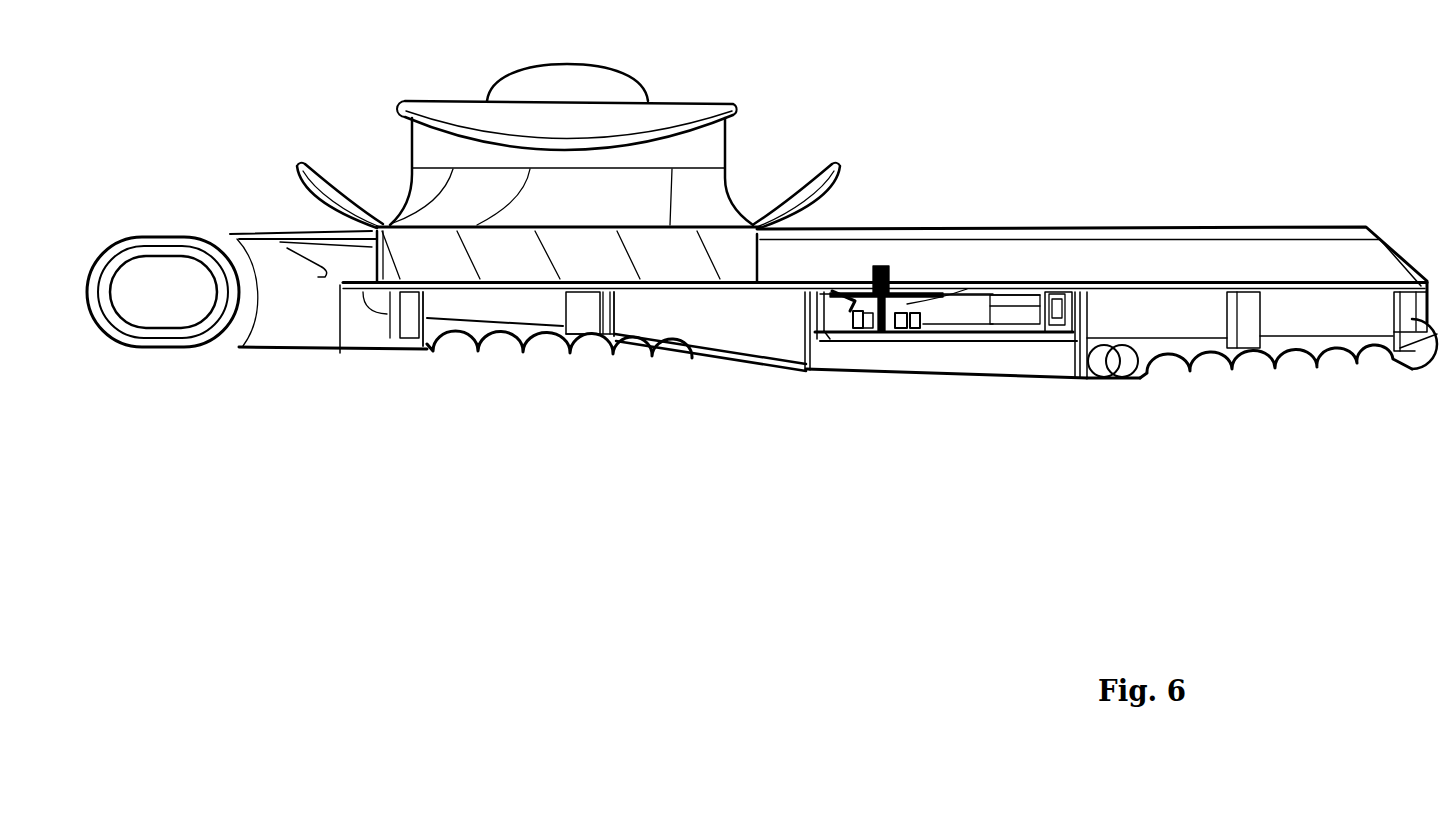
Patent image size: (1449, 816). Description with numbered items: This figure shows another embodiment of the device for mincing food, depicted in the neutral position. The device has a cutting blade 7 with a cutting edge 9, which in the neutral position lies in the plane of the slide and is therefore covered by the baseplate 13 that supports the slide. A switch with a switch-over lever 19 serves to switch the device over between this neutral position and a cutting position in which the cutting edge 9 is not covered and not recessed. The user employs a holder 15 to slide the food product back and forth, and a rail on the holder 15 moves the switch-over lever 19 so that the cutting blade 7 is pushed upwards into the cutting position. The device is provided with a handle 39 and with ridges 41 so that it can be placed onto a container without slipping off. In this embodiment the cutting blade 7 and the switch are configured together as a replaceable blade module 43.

The handle 39 is at (170, 283).
The holder 15 is at (693, 147).
The baseplate 13 is at (320, 320).
The ridges 41 is at (493, 398).
The switch-over lever 19 is at (886, 264).
The cutting blade 7 is at (965, 287).
The cutting edge 9 is at (837, 292).
The replaceable blade module 43 is at (1017, 310).